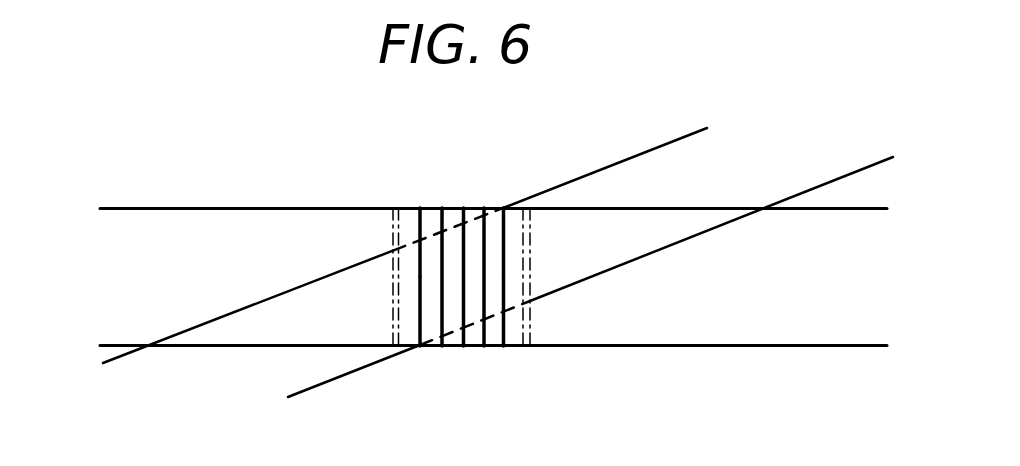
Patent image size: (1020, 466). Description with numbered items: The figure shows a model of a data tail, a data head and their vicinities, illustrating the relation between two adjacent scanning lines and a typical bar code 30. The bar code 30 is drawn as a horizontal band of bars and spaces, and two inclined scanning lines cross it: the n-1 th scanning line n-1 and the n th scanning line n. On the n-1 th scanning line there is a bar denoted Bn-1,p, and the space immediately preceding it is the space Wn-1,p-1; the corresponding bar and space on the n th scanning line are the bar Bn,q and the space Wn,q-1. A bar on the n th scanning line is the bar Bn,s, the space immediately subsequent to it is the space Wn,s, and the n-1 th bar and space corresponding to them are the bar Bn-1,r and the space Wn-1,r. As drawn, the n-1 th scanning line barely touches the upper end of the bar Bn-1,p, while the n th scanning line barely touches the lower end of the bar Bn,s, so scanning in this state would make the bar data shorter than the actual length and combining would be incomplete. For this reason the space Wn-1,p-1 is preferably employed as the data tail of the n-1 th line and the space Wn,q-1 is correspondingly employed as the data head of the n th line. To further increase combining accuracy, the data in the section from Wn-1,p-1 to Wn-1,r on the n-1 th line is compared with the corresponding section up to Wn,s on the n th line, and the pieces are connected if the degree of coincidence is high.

The bar code 30 is at (138, 218).
The n-1 th scanning line n-1 is at (428, 238).
The n th scanning line n is at (600, 269).
The bar Bn-1,r is at (418, 240).
The space Wn-1,r is at (427, 238).
The space Wn-1,p-1 is at (490, 208).
The bar Bn-1,p is at (503, 208).
The bar Bn,s is at (420, 347).
The space Wn,s is at (432, 347).
The space Wn,q-1 is at (492, 313).
The bar Bn,q is at (505, 310).